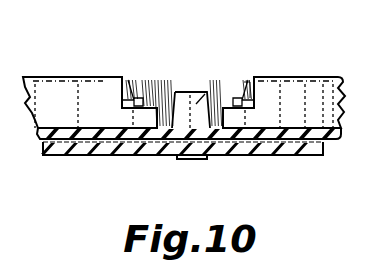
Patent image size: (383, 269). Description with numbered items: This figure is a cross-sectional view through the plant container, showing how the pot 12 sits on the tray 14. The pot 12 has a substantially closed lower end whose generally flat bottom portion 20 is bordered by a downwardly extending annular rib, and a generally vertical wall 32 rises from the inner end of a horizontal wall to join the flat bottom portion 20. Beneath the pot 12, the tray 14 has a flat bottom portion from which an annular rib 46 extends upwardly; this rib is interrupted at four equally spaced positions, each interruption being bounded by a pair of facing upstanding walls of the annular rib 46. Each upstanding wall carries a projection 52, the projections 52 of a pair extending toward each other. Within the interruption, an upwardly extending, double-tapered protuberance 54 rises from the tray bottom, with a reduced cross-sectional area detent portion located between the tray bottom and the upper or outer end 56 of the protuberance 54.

The pot 12 is at (43, 77).
The tray 14 is at (73, 155).
The generally flat bottom portion 20 is at (303, 77).
The generally vertical wall 32 is at (174, 84).
The annular rib 46 is at (266, 77).
The projection 52 is at (138, 98).
The double-tapered protuberance 54 is at (210, 88).
The outer end 56 is at (188, 82).